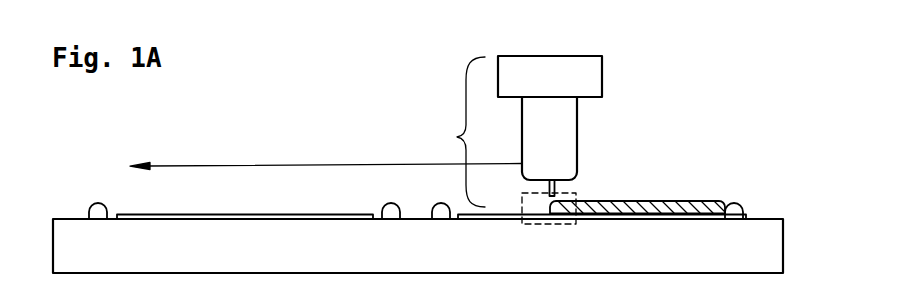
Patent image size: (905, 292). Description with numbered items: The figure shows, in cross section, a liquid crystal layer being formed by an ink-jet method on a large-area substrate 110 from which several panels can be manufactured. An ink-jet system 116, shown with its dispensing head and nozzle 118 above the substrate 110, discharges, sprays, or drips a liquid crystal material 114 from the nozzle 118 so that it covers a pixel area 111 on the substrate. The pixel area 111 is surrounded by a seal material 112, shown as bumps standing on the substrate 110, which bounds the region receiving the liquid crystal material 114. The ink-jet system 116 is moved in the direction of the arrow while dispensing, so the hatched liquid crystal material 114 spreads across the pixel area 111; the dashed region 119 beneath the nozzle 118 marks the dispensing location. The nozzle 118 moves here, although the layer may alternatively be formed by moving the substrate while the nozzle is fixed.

The substrate 110 is at (134, 264).
The pixel area 111 is at (669, 218).
The seal material 112 is at (96, 209).
The liquid crystal material 114 is at (678, 204).
The ink-jet system 116 is at (326, 150).
The nozzle 118 is at (556, 194).
The dispensing region (dashed) 119 is at (530, 224).